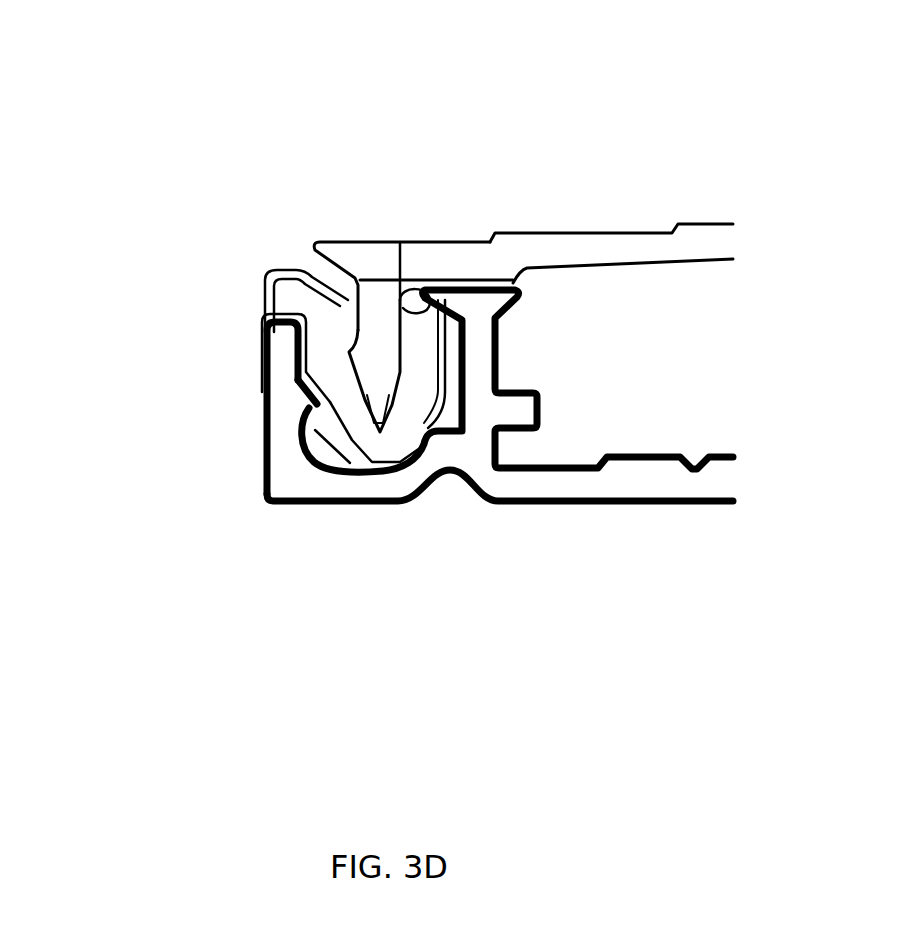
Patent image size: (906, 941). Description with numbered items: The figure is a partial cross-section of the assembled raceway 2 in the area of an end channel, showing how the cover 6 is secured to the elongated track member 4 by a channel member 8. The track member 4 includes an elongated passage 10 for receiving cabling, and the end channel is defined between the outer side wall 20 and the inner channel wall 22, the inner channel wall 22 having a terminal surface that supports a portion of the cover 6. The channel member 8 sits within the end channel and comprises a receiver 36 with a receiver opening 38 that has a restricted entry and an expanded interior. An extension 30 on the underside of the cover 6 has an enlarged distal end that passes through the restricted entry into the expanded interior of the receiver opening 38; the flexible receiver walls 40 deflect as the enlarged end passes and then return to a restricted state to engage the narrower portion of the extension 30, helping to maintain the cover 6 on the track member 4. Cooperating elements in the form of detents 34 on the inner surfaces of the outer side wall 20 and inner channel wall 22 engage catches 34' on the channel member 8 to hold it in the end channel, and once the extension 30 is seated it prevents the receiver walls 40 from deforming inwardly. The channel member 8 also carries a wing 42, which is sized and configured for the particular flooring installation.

The raceway 2 is at (520, 148).
The track member 4 is at (688, 513).
The cover 6 is at (633, 217).
The channel member 8 is at (207, 297).
The elongated passage 10 is at (622, 405).
The outer side wall 20 is at (283, 349).
The inner channel wall 22 is at (478, 360).
The extension 30 is at (376, 357).
The detent 34 is at (397, 365).
The catch 34' is at (363, 400).
The receiver 36 is at (298, 386).
The receiver opening 38 is at (347, 293).
The receiver wall 40 is at (332, 347).
The wing 42 is at (290, 297).